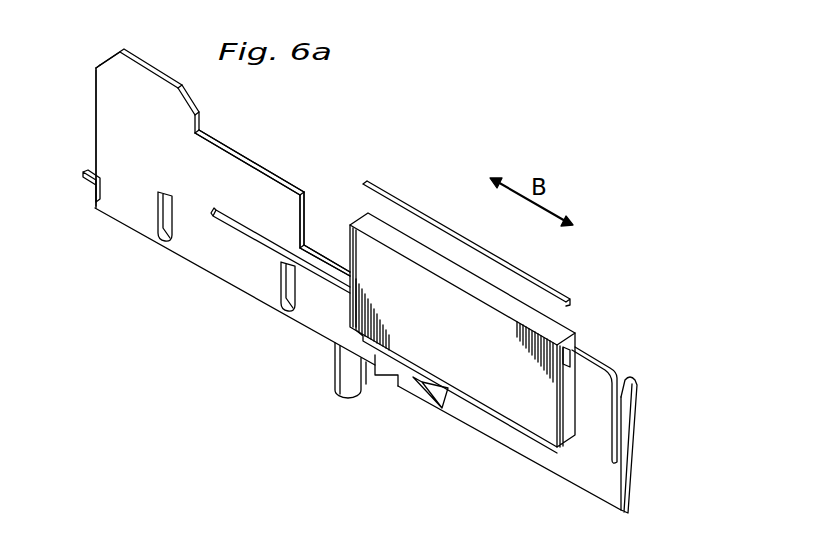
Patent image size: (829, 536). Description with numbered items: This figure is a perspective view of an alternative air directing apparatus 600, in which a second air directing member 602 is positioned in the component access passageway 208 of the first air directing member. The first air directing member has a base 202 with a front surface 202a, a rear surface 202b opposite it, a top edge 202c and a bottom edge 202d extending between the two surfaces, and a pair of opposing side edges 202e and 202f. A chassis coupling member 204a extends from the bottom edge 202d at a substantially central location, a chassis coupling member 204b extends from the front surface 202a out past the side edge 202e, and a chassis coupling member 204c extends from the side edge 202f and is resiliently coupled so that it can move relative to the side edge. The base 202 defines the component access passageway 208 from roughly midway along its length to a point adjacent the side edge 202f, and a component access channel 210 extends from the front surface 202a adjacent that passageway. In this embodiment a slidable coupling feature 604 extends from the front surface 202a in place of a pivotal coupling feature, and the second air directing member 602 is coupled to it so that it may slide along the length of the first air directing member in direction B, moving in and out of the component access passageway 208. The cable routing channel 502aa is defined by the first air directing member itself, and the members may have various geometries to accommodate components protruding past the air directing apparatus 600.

The base 202 is at (109, 56).
The front surface 202a is at (128, 218).
The rear surface 202b is at (290, 180).
The top edge 202c is at (245, 160).
The bottom edge 202d is at (213, 278).
The side edge 202e is at (96, 130).
The side edge 202f is at (612, 390).
The chassis coupling member 204a is at (335, 367).
The chassis coupling member 204b is at (90, 188).
The chassis coupling member 204c is at (638, 397).
The component access passageway 208 is at (466, 243).
The component access channel 210 is at (432, 400).
The cable routing channel 502aa is at (383, 400).
The air directing apparatus 600 is at (395, 155).
The second air directing member 602 is at (580, 337).
The slidable coupling feature 604 is at (243, 224).